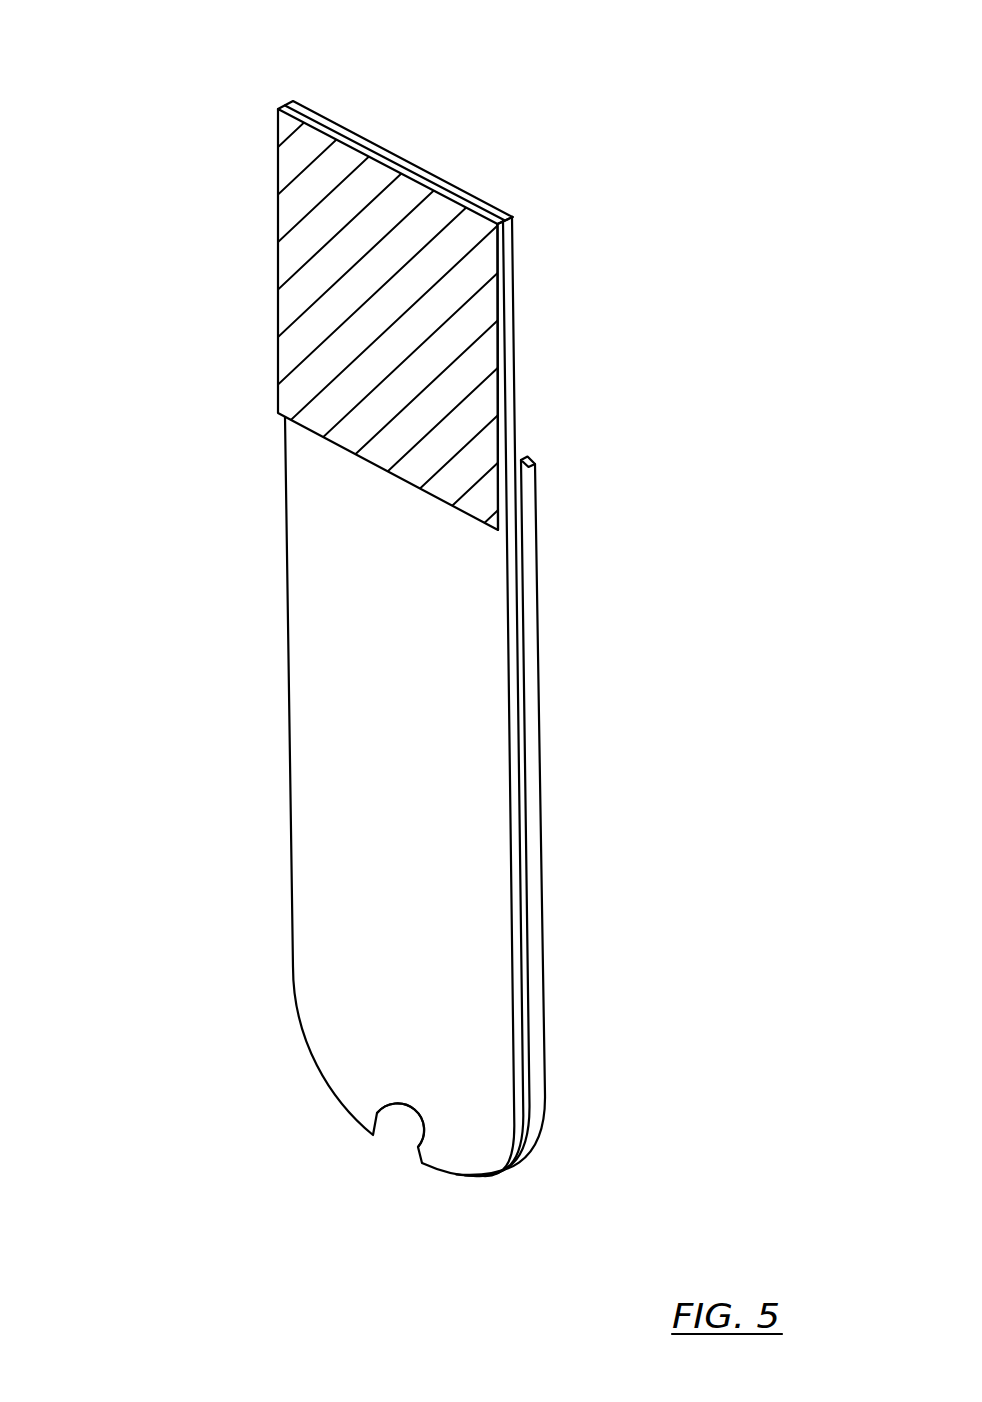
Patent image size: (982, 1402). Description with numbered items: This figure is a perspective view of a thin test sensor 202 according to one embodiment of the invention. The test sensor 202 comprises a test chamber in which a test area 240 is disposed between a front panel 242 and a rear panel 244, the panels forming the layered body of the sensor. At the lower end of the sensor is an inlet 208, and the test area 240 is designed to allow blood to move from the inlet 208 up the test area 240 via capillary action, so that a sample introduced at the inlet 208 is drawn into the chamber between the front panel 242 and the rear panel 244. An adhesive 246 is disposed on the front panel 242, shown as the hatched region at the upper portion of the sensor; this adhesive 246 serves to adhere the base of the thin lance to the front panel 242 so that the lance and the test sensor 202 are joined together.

The thin test sensor 202 is at (126, 73).
The adhesive 246 is at (313, 330).
The test area 240 is at (522, 905).
The front panel 242 is at (500, 1050).
The rear panel 244 is at (540, 1005).
The inlet 208 is at (396, 1145).